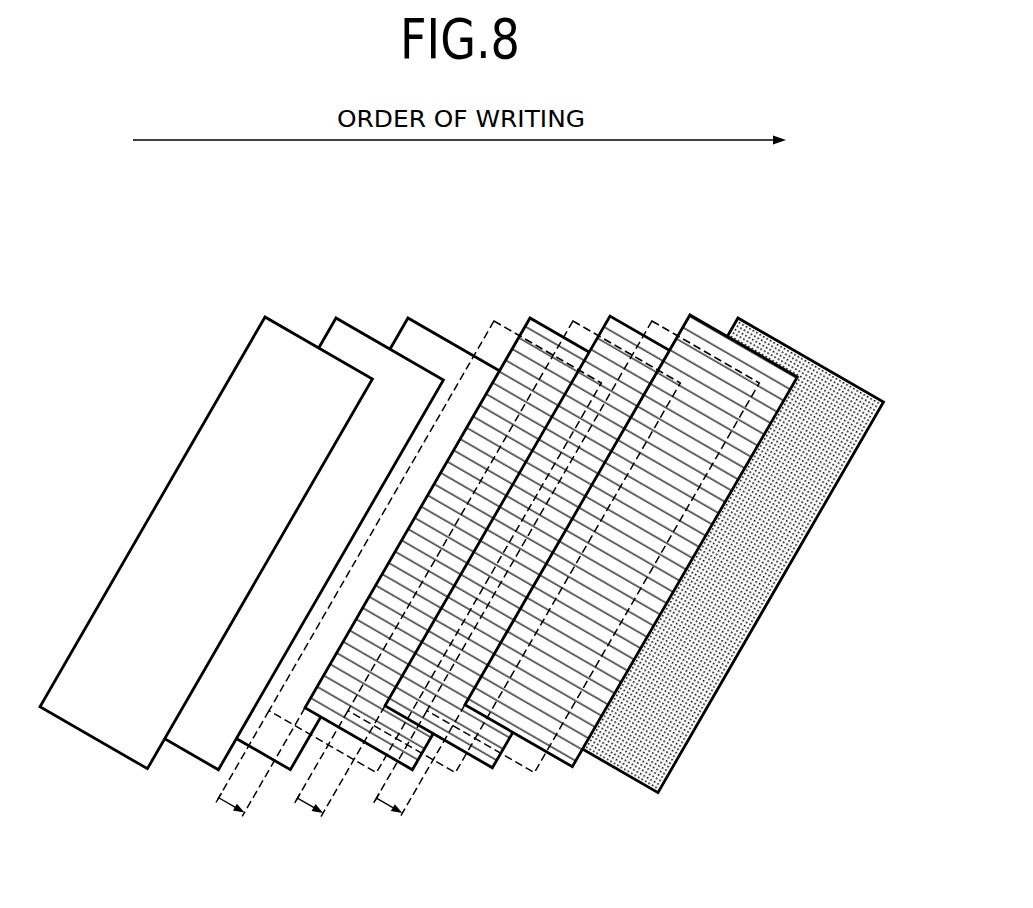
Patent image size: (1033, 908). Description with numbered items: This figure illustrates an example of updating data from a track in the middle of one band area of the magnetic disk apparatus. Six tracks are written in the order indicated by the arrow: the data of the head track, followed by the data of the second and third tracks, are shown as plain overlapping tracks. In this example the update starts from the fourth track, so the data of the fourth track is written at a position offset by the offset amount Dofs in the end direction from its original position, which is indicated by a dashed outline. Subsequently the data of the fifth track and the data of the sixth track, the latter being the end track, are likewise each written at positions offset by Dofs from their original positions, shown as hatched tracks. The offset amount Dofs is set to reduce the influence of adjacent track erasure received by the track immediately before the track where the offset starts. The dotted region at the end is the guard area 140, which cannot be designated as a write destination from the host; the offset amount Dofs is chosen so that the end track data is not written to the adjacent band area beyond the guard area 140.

The guard area 140 is at (628, 763).
The offset amount Dofs is at (229, 808).